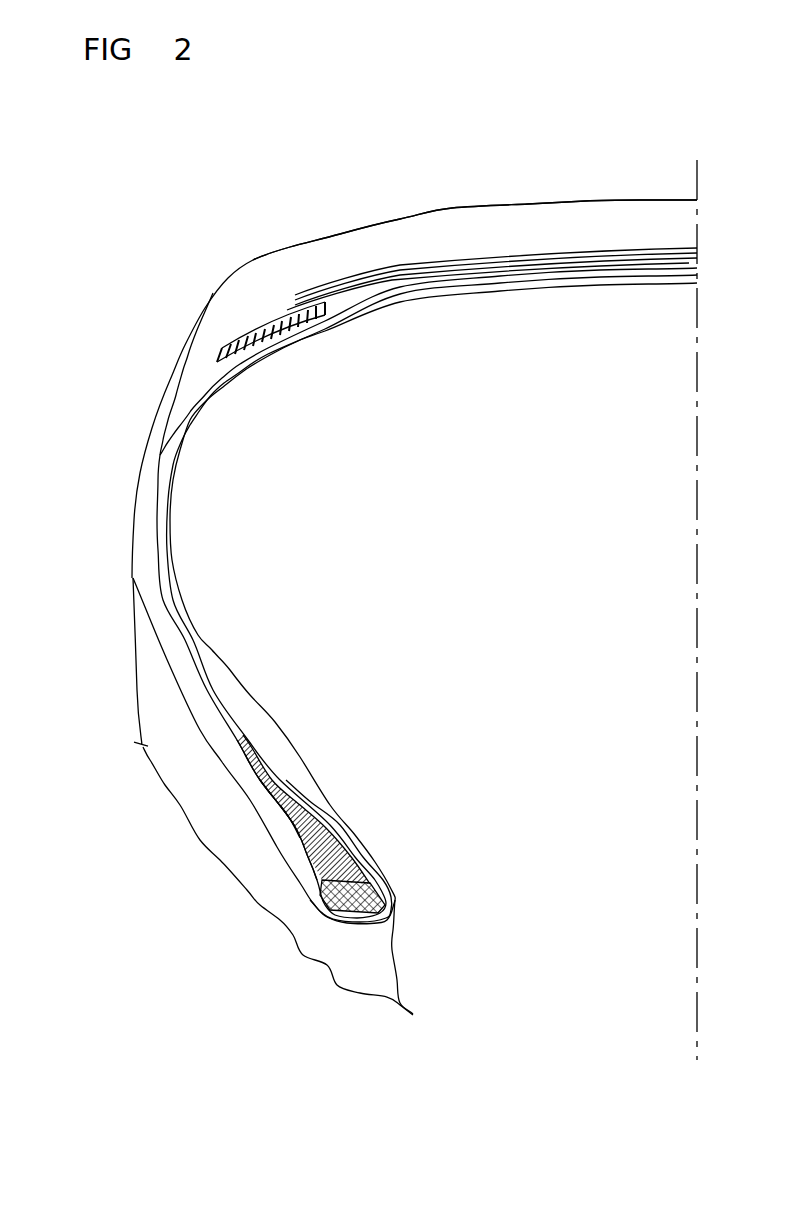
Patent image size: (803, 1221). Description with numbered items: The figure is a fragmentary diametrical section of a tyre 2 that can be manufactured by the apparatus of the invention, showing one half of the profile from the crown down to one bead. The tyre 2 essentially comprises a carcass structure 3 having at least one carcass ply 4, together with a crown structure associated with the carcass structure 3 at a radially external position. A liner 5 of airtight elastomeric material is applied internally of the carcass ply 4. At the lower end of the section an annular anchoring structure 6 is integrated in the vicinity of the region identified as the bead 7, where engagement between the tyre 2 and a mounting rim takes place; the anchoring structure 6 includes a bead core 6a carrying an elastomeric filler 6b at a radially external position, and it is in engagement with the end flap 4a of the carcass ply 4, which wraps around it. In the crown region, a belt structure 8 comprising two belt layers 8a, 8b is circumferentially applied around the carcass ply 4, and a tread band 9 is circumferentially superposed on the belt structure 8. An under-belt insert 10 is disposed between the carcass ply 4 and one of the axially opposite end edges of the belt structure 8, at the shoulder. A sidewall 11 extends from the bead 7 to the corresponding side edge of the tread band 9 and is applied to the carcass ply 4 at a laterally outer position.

The tyre 2 is at (95, 623).
The carcass structure 3 is at (285, 762).
The carcass ply 4 is at (205, 688).
The end flaps 4a is at (307, 865).
The liner 5 is at (328, 323).
The annular anchoring structure 6 is at (320, 800).
The bead core 6a is at (393, 890).
The elastomeric filler 6b is at (297, 837).
The bead 7 is at (385, 854).
The belt structure 8 is at (660, 232).
The belt layer 8a is at (528, 267).
The belt layer 8b is at (472, 260).
The tread band 9 is at (585, 227).
The under-belt insert 10 is at (253, 327).
The sidewall 11 is at (140, 473).